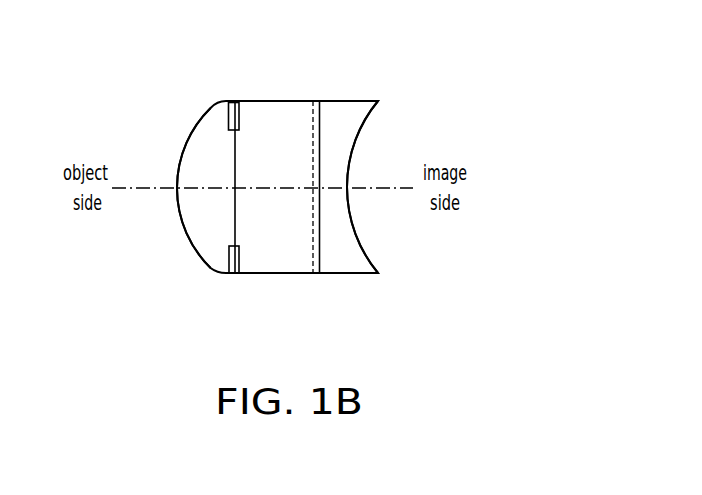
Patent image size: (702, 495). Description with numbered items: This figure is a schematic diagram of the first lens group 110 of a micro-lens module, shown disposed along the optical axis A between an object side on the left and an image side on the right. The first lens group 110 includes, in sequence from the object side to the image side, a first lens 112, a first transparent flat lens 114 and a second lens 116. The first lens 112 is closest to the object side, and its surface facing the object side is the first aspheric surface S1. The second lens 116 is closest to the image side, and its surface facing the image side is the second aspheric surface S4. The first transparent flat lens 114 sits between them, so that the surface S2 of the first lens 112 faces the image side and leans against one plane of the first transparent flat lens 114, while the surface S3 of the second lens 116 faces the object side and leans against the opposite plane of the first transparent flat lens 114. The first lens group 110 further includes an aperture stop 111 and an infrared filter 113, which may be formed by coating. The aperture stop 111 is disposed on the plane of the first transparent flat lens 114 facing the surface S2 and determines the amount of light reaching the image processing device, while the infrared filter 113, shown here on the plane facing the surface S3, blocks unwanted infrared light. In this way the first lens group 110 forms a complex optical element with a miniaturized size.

The first lens group 110 is at (342, 320).
The aperture stop 111 is at (234, 110).
The first lens 112 is at (203, 246).
The infrared filter 113 is at (313, 100).
The first transparent flat lens 114 is at (275, 253).
The second lens 116 is at (342, 258).
The optical axis A is at (163, 190).
The first aspheric surface S1 is at (179, 153).
The surface of the first lens facing the image side S2 is at (229, 143).
The surface of the second lens facing the object side S3 is at (322, 128).
The second aspheric surface S4 is at (365, 127).